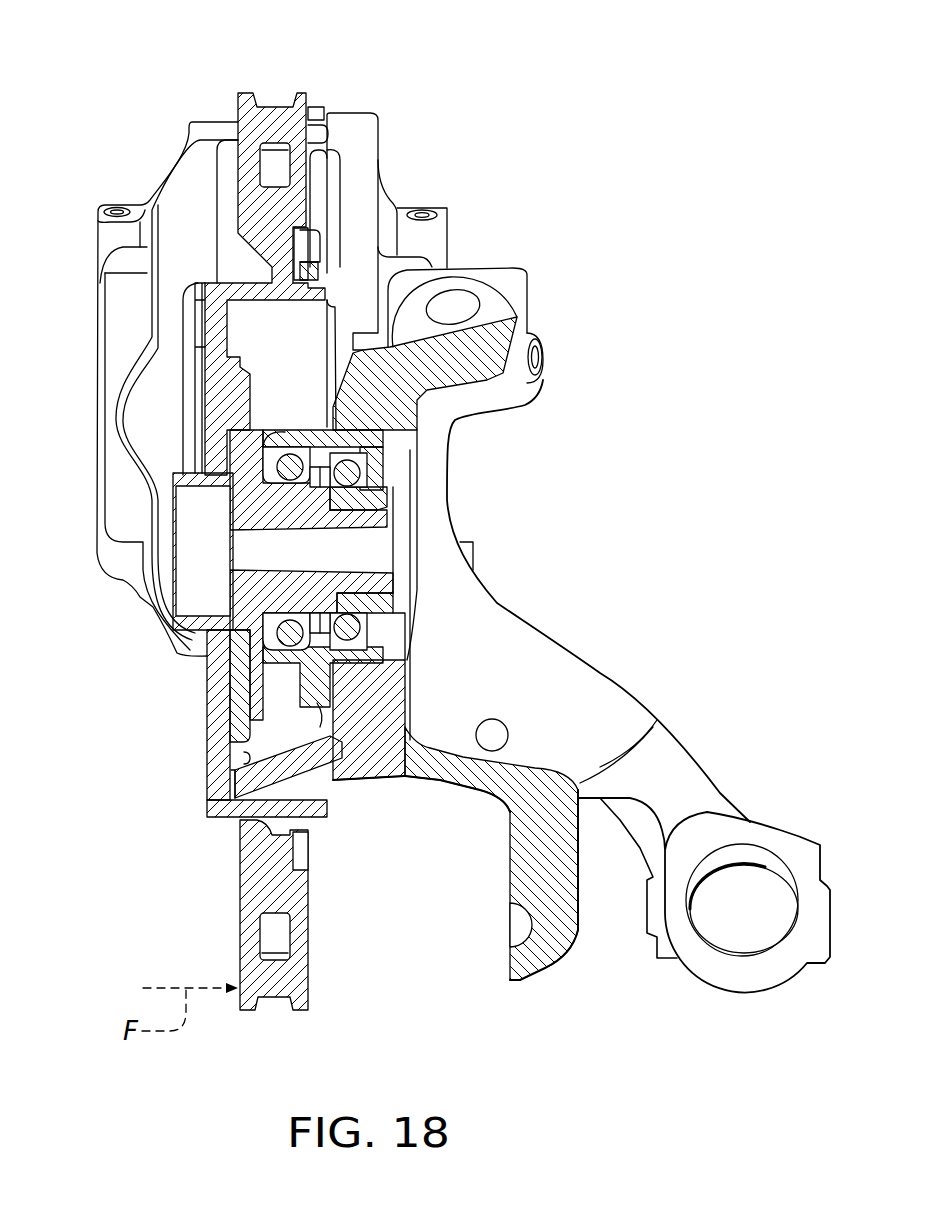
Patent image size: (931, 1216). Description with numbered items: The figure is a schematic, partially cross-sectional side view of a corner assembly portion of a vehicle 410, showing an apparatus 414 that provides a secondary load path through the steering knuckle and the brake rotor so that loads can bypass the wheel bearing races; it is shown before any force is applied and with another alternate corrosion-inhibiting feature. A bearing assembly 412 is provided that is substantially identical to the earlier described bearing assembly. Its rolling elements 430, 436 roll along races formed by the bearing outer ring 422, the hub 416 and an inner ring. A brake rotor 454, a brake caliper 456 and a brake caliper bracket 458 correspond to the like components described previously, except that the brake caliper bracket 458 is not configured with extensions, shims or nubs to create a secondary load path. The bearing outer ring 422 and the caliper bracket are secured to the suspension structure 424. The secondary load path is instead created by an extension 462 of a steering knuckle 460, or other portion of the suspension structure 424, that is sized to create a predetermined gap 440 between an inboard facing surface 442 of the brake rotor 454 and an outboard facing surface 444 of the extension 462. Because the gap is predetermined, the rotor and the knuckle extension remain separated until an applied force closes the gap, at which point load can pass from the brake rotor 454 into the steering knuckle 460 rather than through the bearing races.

The vehicle 410 is at (445, 133).
The bearing assembly 412 is at (160, 670).
The apparatus 414 is at (210, 845).
The hub 416 is at (135, 586).
The bearing outer ring 422 is at (355, 762).
The suspension structure 424 is at (440, 778).
The rolling elements 430 is at (355, 475).
The rolling elements 436 is at (283, 613).
The predetermined gap 440 is at (225, 828).
The inboard facing surface 442 is at (236, 757).
The outboard facing surface 444 is at (231, 781).
The brake rotor 454 is at (215, 790).
The brake caliper 456 is at (447, 240).
The brake caliper bracket 458 is at (350, 123).
The steering knuckle 460 is at (407, 778).
The extension 462 is at (342, 790).